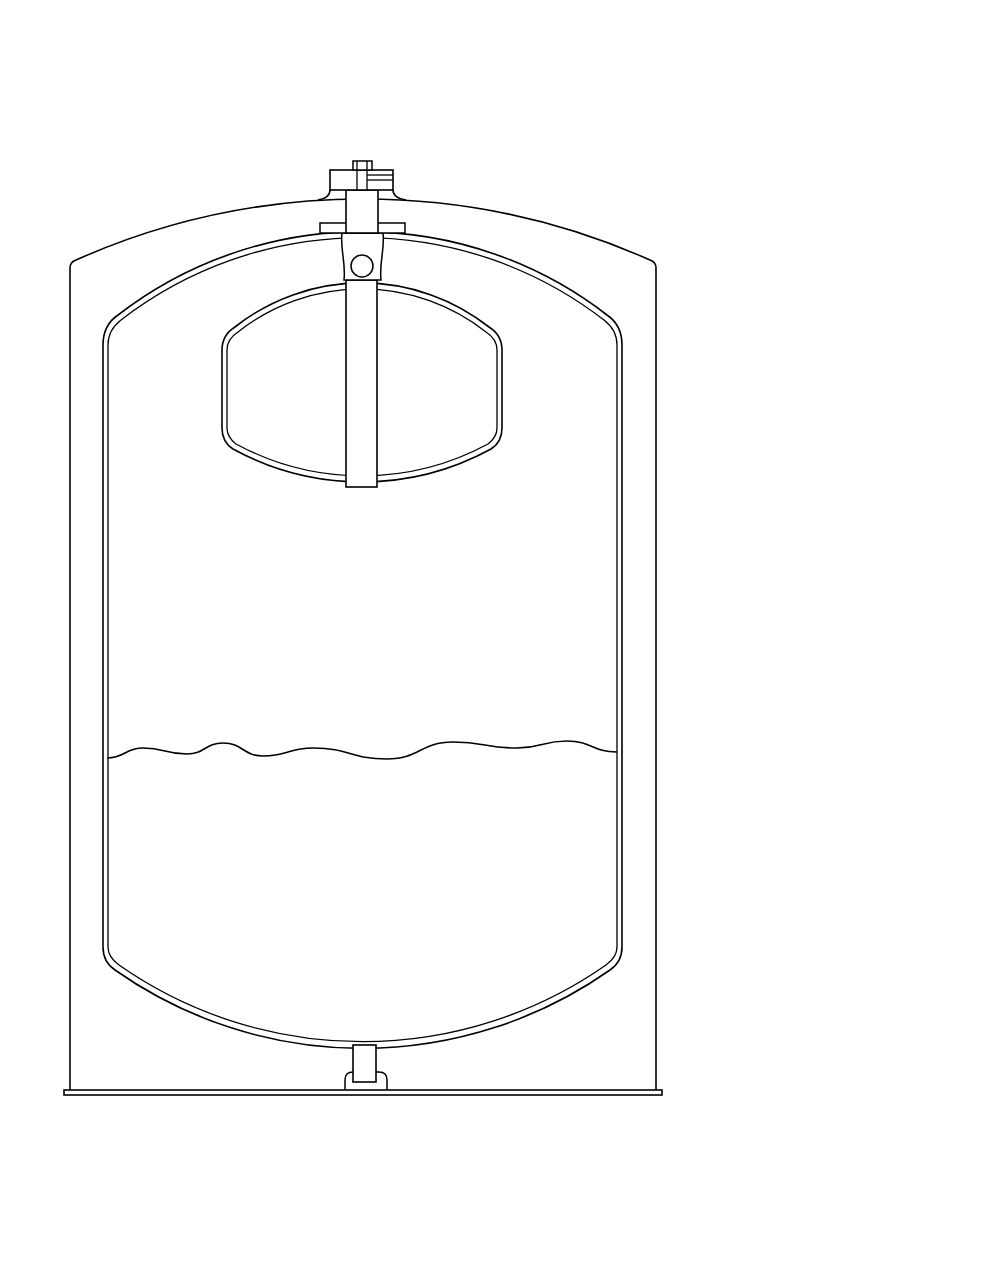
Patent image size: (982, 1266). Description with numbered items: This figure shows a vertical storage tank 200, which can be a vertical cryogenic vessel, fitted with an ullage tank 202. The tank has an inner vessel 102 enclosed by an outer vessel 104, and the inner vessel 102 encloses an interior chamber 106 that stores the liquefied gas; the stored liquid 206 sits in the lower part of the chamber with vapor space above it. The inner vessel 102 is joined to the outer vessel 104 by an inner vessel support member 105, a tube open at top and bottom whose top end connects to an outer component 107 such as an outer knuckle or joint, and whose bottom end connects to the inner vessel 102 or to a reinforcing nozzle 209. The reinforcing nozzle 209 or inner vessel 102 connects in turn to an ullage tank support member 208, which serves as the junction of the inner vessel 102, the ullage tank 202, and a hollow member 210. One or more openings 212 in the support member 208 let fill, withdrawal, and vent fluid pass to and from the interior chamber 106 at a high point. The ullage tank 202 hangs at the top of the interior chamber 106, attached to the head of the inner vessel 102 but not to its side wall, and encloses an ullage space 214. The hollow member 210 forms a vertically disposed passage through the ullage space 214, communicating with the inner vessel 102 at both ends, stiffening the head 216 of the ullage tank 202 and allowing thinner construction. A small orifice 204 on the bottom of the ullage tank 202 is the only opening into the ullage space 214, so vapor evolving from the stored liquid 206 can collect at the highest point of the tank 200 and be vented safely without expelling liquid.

The vertical storage tank 200 is at (96, 84).
The inner vessel 102 is at (623, 490).
The outer vessel 104 is at (657, 545).
The inner vessel support member 105 is at (366, 217).
The interior chamber 106 is at (574, 666).
The outer component 107 is at (338, 173).
The ullage tank 202 is at (501, 395).
The orifice 204 is at (405, 473).
The stored liquid 206 is at (577, 902).
The ullage tank support member 208 is at (383, 254).
The reinforcing nozzle 209 is at (399, 230).
The hollow member 210 is at (378, 314).
The openings 212 is at (372, 263).
The ullage space 214 is at (465, 362).
The head 216 is at (293, 288).